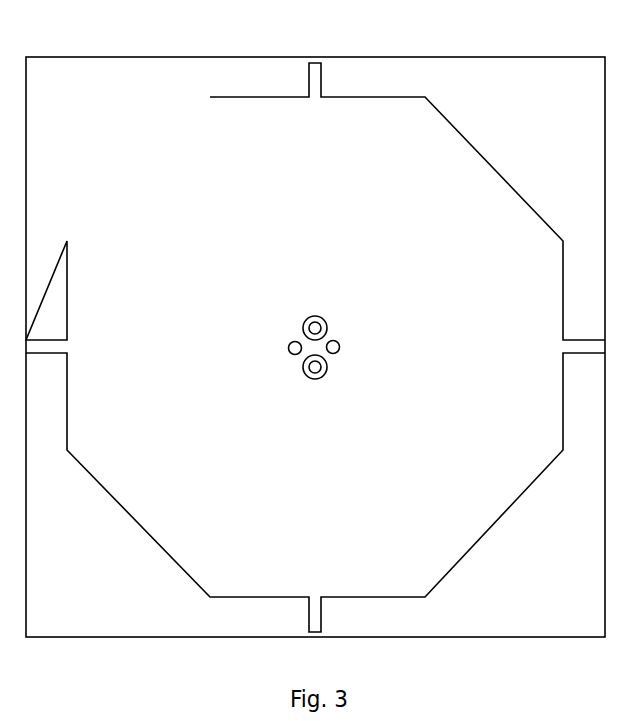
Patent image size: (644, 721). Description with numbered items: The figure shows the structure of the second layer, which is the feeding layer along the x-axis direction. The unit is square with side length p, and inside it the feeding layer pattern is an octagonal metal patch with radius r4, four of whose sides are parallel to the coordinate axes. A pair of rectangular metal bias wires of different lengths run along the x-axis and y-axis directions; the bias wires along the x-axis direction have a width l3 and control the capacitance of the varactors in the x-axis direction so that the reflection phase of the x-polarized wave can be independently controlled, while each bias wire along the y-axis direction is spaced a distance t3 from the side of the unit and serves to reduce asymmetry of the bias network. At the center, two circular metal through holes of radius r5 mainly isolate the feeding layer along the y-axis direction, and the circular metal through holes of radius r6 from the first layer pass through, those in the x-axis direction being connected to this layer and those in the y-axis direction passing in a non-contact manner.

The side length of the second layer p is at (57, 627).
The distance between bias wire along the y-axis direction and side of the unit t3 is at (315, 25).
The width of the bias wires along the x-axis direction l3 is at (588, 362).
The radius of the octagonal feeding layer pattern r4 is at (317, 347).
The radius of the circular metal through holes for isolation r5 is at (268, 328).
The radius of the circular metal through holes r6 is at (285, 367).